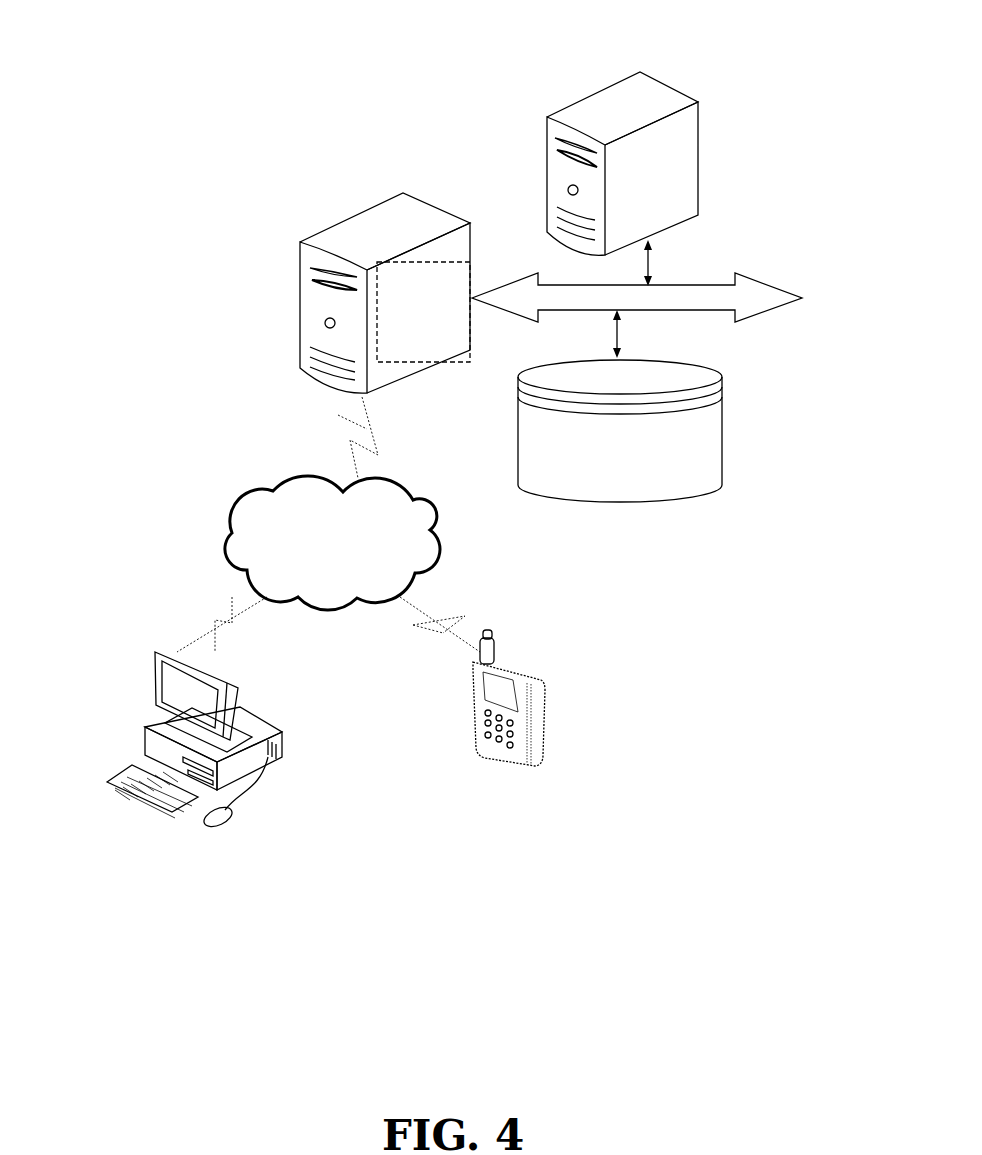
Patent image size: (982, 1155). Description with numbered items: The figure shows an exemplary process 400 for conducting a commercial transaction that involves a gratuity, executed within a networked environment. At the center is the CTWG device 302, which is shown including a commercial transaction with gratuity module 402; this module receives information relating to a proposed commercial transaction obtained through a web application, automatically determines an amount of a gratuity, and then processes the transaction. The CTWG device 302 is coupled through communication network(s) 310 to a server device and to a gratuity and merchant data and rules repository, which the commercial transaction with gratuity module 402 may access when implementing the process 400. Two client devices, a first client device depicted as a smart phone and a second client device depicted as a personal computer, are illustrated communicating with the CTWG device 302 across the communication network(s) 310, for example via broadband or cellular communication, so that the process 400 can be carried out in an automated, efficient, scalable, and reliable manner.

The process for conducting a commercial transaction involving a gratuity 400 is at (165, 157).
The CTWG device 302 is at (382, 192).
The commercial transaction with gratuity module 402 is at (423, 312).
The communication network(s) 310 is at (489, 446).